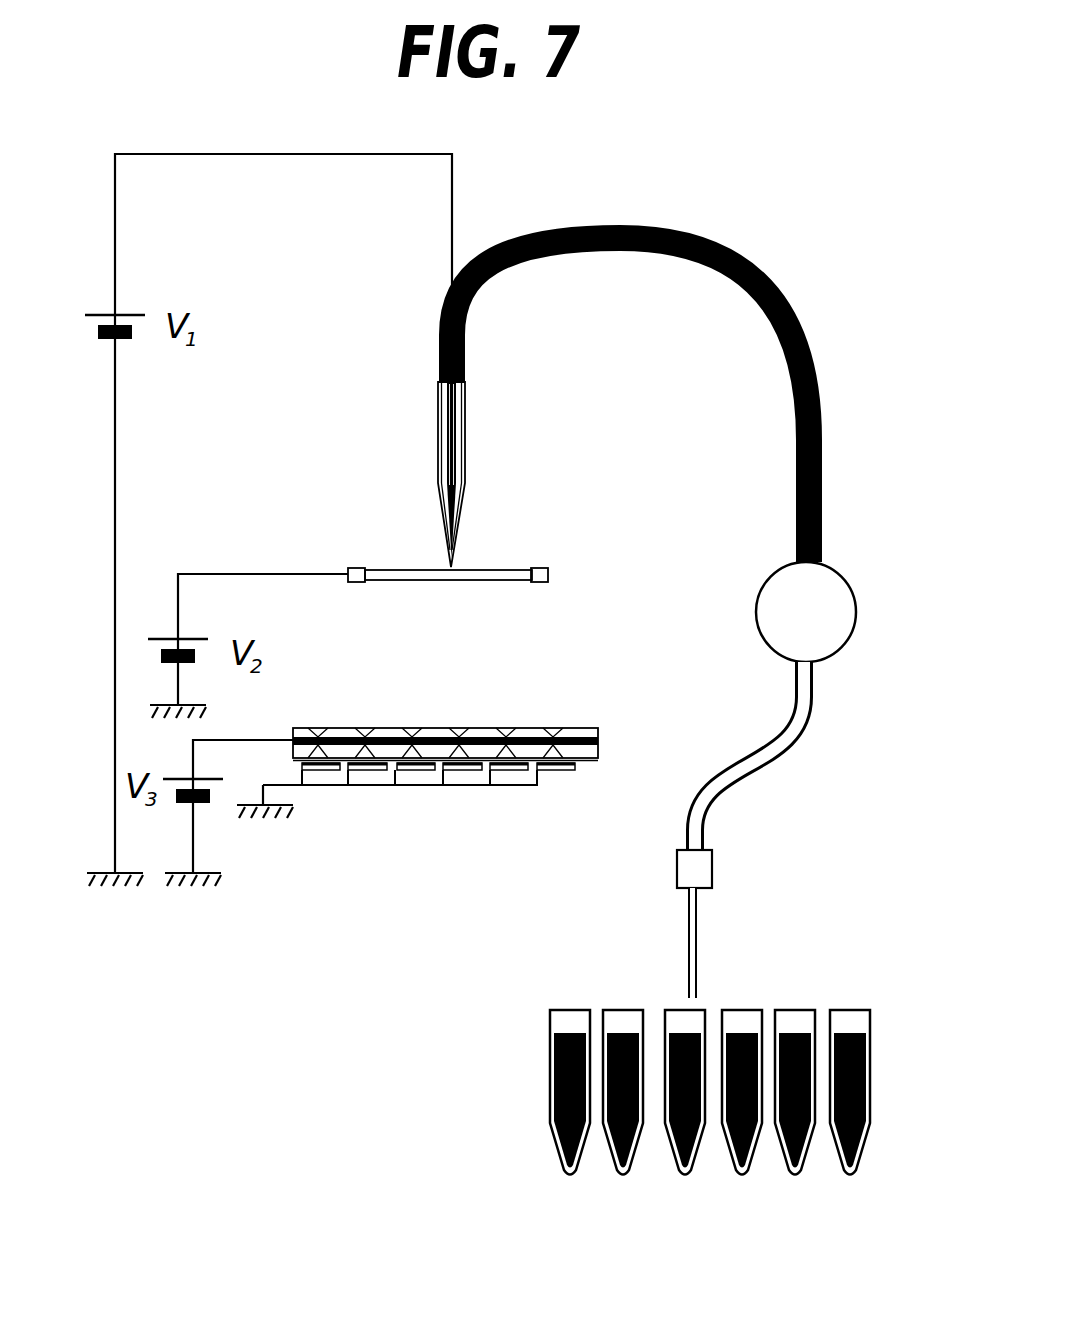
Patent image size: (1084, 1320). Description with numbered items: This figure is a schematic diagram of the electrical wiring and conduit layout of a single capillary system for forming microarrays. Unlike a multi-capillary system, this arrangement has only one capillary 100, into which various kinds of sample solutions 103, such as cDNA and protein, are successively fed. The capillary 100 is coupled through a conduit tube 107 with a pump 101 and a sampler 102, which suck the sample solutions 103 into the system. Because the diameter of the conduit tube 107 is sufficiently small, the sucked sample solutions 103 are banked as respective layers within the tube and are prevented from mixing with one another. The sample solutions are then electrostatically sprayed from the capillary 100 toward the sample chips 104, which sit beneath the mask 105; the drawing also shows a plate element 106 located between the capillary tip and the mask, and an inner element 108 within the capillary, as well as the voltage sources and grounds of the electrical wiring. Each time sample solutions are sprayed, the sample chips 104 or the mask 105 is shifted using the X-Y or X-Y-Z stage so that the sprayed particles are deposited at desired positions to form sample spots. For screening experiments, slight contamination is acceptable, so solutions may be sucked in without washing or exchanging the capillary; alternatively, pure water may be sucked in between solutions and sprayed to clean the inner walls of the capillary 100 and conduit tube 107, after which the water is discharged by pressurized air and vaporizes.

The capillary 100 is at (438, 402).
The pump 101 is at (763, 577).
The sampler 102 is at (725, 877).
The sample solutions 103 is at (533, 1088).
The sample chips 104 is at (573, 770).
The mask 105 is at (537, 731).
The counter electrode plate 106 is at (350, 570).
The conduit tube 107 is at (437, 325).
The inner capillary 108 is at (462, 420).